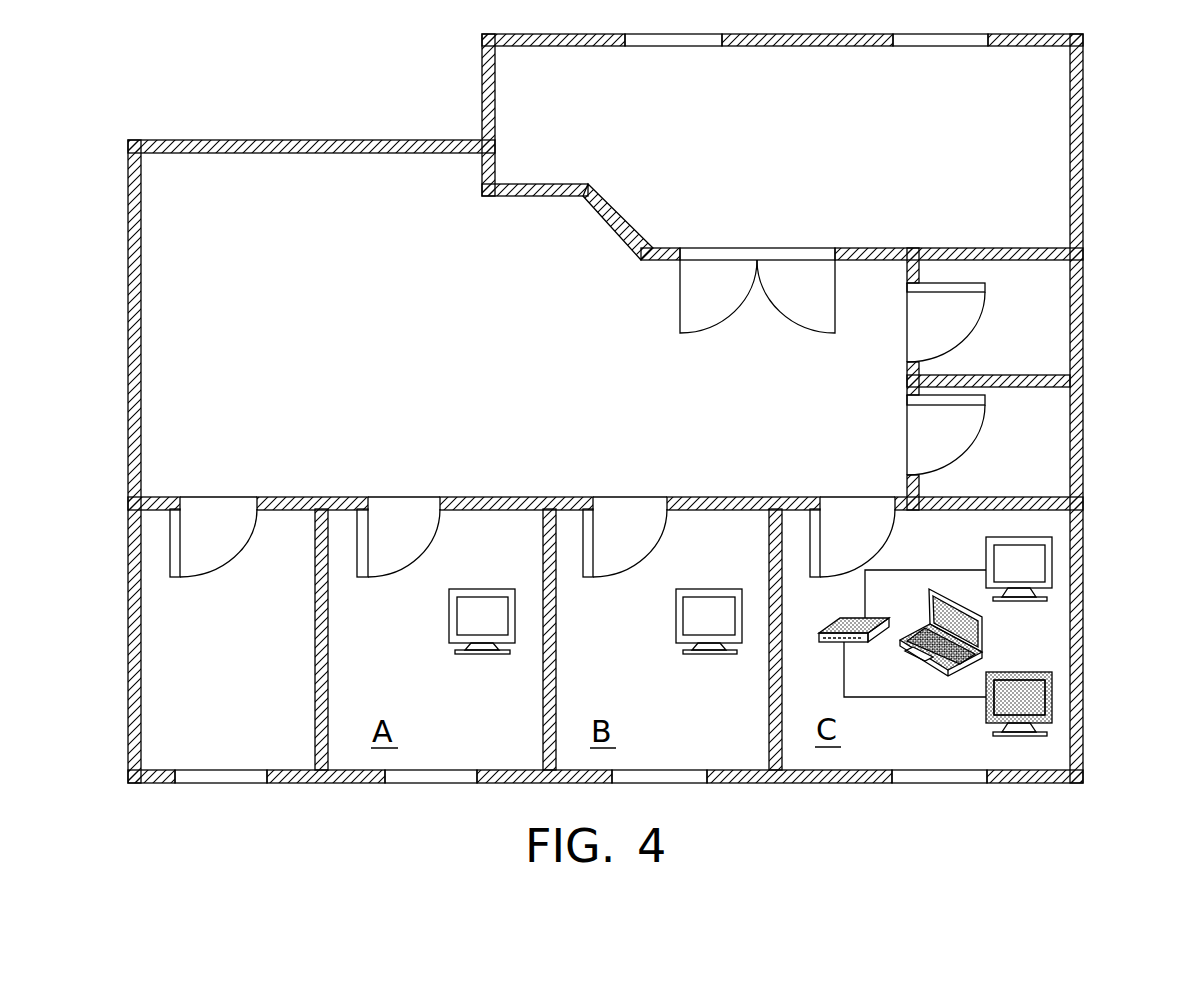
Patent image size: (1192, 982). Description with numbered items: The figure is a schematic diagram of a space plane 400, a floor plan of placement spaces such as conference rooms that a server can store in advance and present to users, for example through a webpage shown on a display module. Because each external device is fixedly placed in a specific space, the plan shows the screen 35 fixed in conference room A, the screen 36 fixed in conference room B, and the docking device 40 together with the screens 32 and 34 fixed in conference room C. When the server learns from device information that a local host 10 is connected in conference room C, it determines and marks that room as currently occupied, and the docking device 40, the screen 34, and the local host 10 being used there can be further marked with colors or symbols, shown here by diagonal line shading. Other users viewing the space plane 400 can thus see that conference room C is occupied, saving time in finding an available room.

The space plane 400 is at (1083, 97).
The local host 10 is at (983, 637).
The screen 32 is at (1052, 560).
The screen 34 is at (1052, 695).
The screen 35 is at (449, 620).
The screen 36 is at (676, 619).
The docking device 40 is at (840, 618).